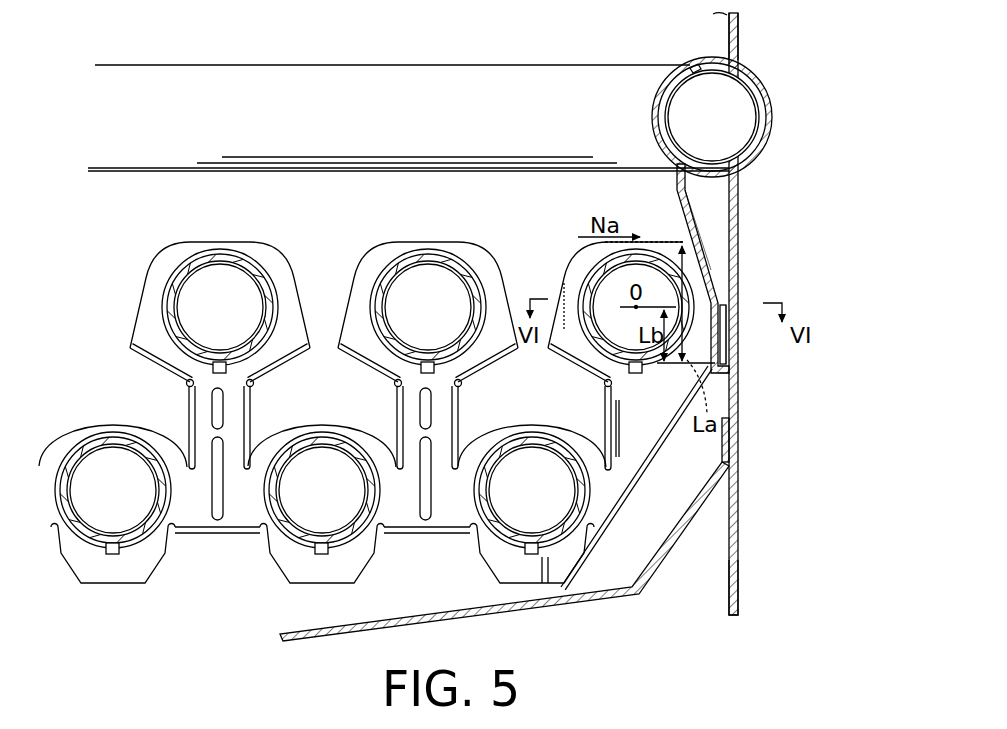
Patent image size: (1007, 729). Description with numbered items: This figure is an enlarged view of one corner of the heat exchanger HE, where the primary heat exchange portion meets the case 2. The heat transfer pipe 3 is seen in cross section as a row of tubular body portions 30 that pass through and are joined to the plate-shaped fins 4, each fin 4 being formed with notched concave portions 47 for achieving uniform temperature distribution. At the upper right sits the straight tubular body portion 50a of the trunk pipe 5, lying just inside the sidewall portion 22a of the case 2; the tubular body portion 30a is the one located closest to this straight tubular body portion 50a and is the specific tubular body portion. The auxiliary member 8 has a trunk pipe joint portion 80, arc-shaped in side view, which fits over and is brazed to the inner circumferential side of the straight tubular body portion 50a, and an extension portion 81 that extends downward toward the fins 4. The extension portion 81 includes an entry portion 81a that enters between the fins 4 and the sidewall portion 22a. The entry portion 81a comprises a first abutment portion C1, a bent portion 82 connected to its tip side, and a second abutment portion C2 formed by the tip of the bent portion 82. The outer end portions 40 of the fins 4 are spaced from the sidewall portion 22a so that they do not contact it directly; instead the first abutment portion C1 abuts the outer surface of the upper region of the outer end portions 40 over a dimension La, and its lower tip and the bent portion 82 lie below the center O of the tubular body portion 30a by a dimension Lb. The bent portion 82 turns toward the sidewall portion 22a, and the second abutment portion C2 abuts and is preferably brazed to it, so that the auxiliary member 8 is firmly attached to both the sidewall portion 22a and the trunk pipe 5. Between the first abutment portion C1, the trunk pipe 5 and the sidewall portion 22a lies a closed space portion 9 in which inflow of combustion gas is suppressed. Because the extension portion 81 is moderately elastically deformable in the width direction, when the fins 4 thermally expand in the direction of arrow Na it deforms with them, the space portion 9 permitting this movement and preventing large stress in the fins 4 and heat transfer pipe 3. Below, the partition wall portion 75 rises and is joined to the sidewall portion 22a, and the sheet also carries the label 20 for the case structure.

The case 2 is at (742, 490).
The heat transfer pipe 3 is at (178, 272).
The fin 4 is at (572, 282).
The trunk pipe 5 is at (358, 75).
The auxiliary member 8 is at (650, 110).
The space portion 9 is at (738, 296).
The casing 20 is at (744, 556).
The sidewall portion 22a is at (740, 36).
The tubular body portion 30 is at (224, 256).
The tubular body portion 30a is at (655, 219).
The outer end portion 40 is at (704, 272).
The notched concave portion 47 is at (320, 363).
The straight tubular body portion 50a is at (710, 62).
The partition wall portion 75 is at (651, 569).
The trunk pipe joint portion 80 is at (657, 118).
The extension portion 81 is at (688, 207).
The entry portion 81a is at (718, 290).
The bent portion 82 is at (724, 386).
The first abutment portion C1 is at (720, 302).
The second abutment portion C2 is at (737, 381).
The heat exchanger HE is at (797, 74).